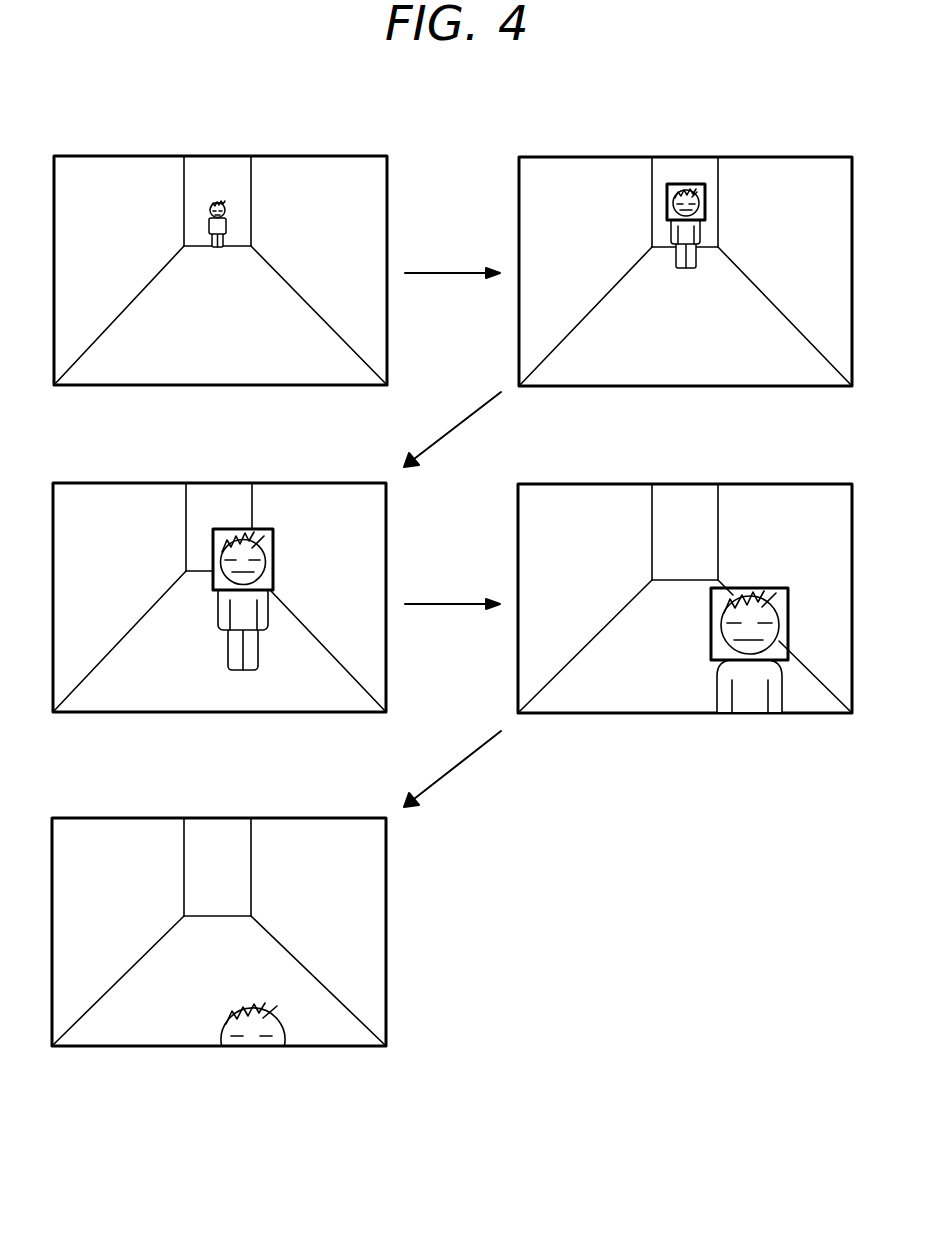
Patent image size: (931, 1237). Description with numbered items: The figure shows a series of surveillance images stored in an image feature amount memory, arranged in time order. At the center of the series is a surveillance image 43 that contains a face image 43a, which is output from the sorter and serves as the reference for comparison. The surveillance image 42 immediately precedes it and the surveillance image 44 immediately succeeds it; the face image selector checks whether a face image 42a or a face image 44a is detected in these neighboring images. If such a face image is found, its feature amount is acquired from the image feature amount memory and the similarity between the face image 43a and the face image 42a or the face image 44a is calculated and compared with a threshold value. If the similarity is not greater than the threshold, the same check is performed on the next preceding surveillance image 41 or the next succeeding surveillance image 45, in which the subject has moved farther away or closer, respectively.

The surveillance image 41 is at (287, 156).
The surveillance image 42 is at (685, 253).
The face image 42a is at (705, 207).
The surveillance image 43 is at (219, 580).
The face image 43a is at (273, 563).
The surveillance image 44 is at (685, 580).
The face image 44a is at (762, 588).
The surveillance image 45 is at (287, 818).